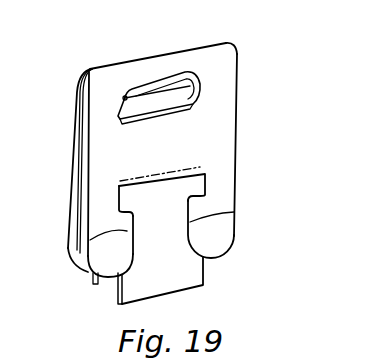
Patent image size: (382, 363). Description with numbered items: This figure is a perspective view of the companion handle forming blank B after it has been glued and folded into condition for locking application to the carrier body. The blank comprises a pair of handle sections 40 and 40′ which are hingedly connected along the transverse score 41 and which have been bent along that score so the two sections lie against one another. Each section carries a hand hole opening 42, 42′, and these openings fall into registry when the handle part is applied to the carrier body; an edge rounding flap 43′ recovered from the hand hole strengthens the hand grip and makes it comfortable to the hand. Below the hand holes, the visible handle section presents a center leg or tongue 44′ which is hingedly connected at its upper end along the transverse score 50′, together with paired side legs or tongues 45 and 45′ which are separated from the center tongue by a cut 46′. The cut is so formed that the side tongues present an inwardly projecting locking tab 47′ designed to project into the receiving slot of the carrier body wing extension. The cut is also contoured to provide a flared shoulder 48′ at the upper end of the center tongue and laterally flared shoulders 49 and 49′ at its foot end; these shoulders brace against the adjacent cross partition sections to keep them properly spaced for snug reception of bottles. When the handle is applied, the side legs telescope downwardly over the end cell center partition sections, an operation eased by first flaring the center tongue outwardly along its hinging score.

The bracket B is at (233, 42).
The handle section 40 is at (73, 153).
The handle section 40′ is at (236, 137).
The transverse score 41 is at (113, 65).
The hand hole opening 42 is at (201, 93).
The hand hole opening 42′ is at (204, 107).
The edge rounding flap 43′ is at (157, 82).
The center leg or tongue 44′ is at (173, 233).
The side leg or tongue 45 is at (72, 213).
The side leg or tongue 45′ is at (97, 222).
The cut 46′ is at (187, 244).
The locking tab 47′ is at (98, 233).
The flared shoulder 48′ is at (119, 193).
The laterally flared shoulder 49 is at (93, 280).
The laterally flared shoulder 49′ is at (117, 294).
The transverse score 50′ is at (156, 177).